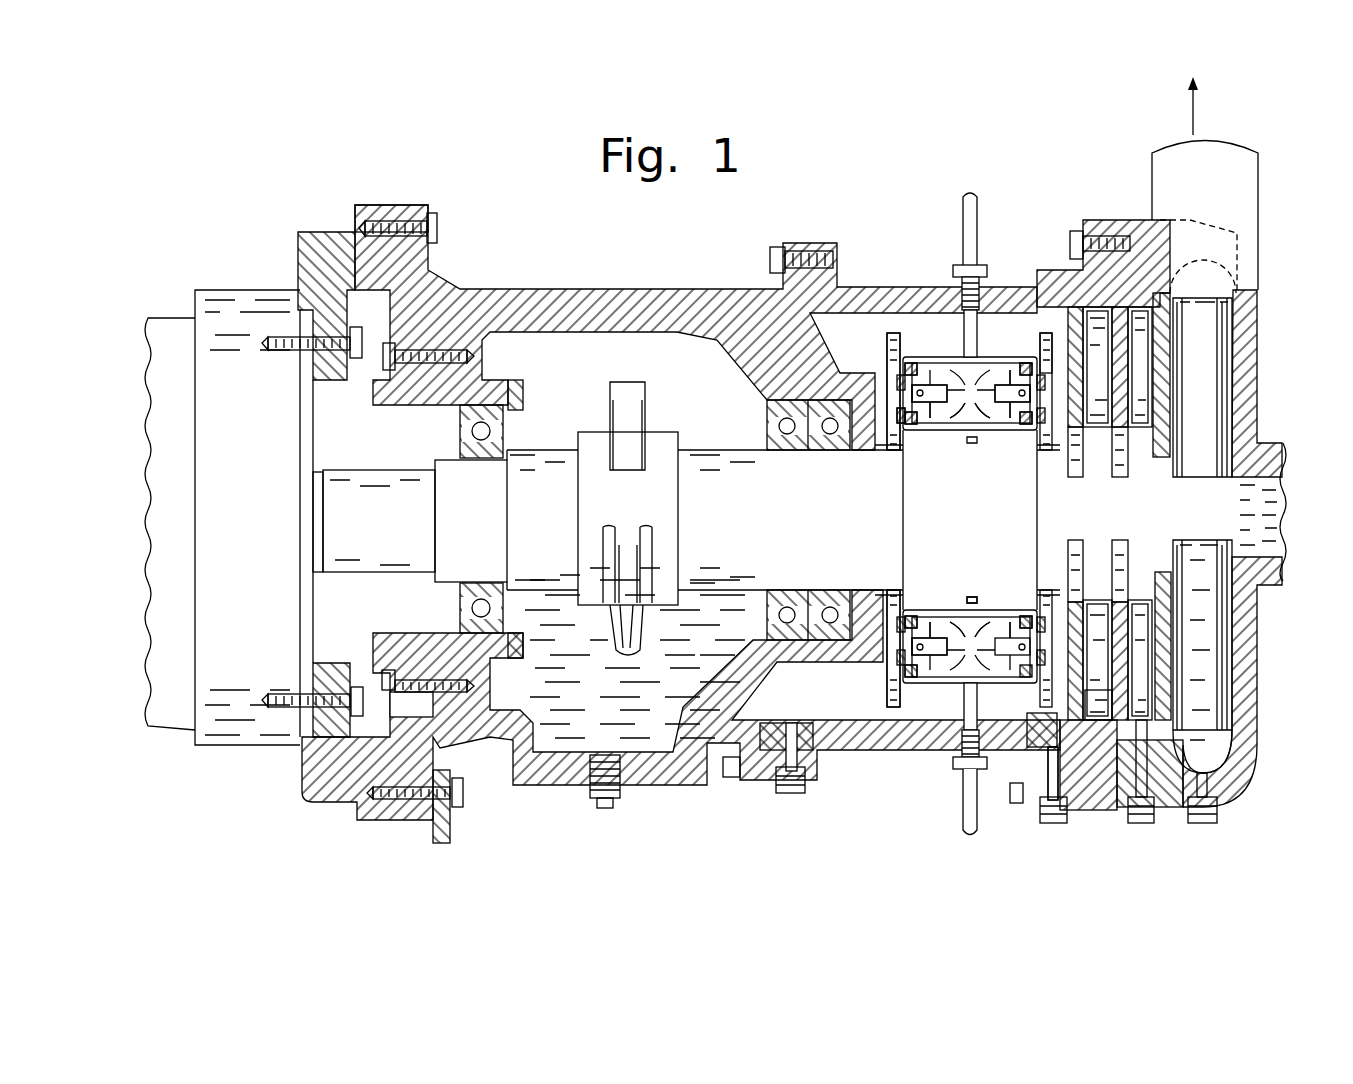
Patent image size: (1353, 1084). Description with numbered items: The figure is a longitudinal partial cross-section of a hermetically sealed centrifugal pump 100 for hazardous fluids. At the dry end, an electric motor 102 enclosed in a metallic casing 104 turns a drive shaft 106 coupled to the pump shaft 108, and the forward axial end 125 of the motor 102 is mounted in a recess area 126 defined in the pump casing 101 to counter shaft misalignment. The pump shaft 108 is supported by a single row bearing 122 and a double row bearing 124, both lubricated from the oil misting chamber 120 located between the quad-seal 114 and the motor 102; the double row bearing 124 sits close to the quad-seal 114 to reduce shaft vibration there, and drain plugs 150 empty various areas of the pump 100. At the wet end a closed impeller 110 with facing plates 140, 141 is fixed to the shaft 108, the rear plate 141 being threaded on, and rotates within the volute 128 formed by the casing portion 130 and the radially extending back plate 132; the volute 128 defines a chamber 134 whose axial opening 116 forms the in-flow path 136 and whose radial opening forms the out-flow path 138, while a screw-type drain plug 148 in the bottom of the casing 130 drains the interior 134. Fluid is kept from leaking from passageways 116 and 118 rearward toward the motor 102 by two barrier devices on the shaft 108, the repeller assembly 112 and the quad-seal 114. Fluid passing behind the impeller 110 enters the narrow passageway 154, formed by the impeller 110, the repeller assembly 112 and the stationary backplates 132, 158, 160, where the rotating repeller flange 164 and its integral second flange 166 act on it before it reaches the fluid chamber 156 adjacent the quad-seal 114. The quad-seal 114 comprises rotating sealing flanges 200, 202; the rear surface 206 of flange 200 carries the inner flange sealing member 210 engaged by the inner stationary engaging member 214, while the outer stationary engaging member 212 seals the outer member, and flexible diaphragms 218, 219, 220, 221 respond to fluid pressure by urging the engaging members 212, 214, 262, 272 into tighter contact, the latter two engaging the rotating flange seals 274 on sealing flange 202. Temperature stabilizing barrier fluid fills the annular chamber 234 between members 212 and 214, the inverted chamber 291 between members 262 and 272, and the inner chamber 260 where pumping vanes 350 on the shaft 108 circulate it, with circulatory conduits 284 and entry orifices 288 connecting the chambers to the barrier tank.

The pump 100 is at (572, 234).
The pump casing 101 is at (313, 223).
The electric motor 102 is at (175, 720).
The metallic casing 104 is at (170, 350).
The drive shaft 106 is at (317, 550).
The pump shaft 108 is at (378, 540).
The impeller 110 is at (1207, 450).
The repeller assembly 112 is at (1030, 795).
The quad-seal construction 114 is at (855, 712).
The axial opening 116 is at (1273, 480).
The pump passageway 118 is at (1240, 187).
The oil misting chamber 120 is at (694, 400).
The bearing assembly 122 is at (508, 440).
The double row bearing assembly 124 is at (766, 408).
The forward axial end 125 is at (305, 448).
The recess area 126 is at (305, 300).
The volute 128 is at (1203, 293).
The metal casing portion 130 is at (1253, 410).
The back plate 132 is at (1197, 327).
The chamber 134 is at (1220, 760).
The in-flow path 136 is at (1340, 514).
The out-flow path 138 is at (1200, 130).
The facing plate 140 is at (1223, 608).
The rear plate 141 is at (1182, 635).
The drain plug 148 is at (1205, 823).
The drain plugs 150 is at (603, 807).
The passageway 154 is at (1160, 290).
The fluid chamber 156 is at (1035, 355).
The stationary backplate 158 is at (1123, 383).
The stationary backplate 160 is at (1078, 295).
The repeller flange 164 is at (1140, 360).
The second repeller flange 166 is at (1100, 697).
The first rotating sealing flange 200 is at (1045, 345).
The second rotating sealing flange 202 is at (895, 350).
The rear radially extending surface 206 is at (1020, 358).
The inner flange sealing member 210 is at (1015, 760).
The radially outer stationary engaging member 212 is at (1013, 360).
The radially inner stationary engaging member 214 is at (1023, 432).
The diaphragm 218 is at (1000, 366).
The diaphragm 219 is at (985, 432).
The diaphragm 220 is at (938, 432).
The diaphragm 221 is at (947, 366).
The temperature stabilizing annular chamber 234 is at (1003, 432).
The barrier chamber 260 is at (955, 432).
The stationary annular engaging member 262 is at (917, 432).
The stationary annular engaging member 272 is at (920, 372).
The rotating flange seals 274 is at (896, 408).
The circulatory conduits 284 is at (944, 516).
The chamber entry orifices 288 is at (1003, 608).
The fluid chamber 291 is at (883, 662).
The pumping vanes 350 is at (973, 593).